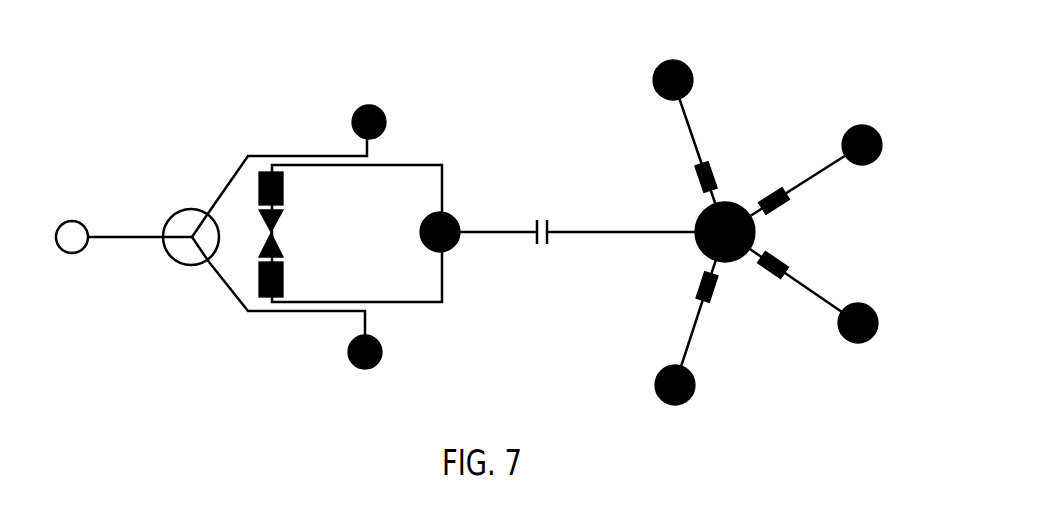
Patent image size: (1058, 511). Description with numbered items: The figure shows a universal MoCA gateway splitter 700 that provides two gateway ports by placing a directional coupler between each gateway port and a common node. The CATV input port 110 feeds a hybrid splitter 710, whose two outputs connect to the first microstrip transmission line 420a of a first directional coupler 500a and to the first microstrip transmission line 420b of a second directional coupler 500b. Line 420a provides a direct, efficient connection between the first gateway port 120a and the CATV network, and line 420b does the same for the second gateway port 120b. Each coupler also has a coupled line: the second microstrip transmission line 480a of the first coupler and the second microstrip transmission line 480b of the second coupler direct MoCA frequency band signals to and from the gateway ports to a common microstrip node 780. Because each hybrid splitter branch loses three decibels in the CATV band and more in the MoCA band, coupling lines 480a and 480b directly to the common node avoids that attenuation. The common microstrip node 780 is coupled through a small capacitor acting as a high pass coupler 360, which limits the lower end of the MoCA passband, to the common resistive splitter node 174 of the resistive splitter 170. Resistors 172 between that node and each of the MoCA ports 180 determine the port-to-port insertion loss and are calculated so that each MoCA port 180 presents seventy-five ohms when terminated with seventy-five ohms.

The universal MoCA gateway splitter 700 is at (776, 32).
The CATV input port 110 is at (64, 256).
The hybrid splitter 710 is at (174, 265).
The first directional coupler 500a is at (259, 358).
The second directional coupler 500b is at (259, 119).
The first microstrip transmission line 420a is at (335, 325).
The first microstrip transmission line 420b is at (290, 149).
The first gateway port 120a is at (381, 351).
The second gateway port 120b is at (386, 121).
The second microstrip transmission line 480a is at (313, 293).
The second microstrip transmission line 480b is at (352, 181).
The common microstrip node 780 is at (458, 221).
The high pass coupler 360 is at (543, 251).
The resistive splitter 170 is at (828, 232).
The common resistive splitter node 174 is at (757, 239).
The resistors 172 is at (697, 173).
The MoCA ports 180 is at (694, 73).